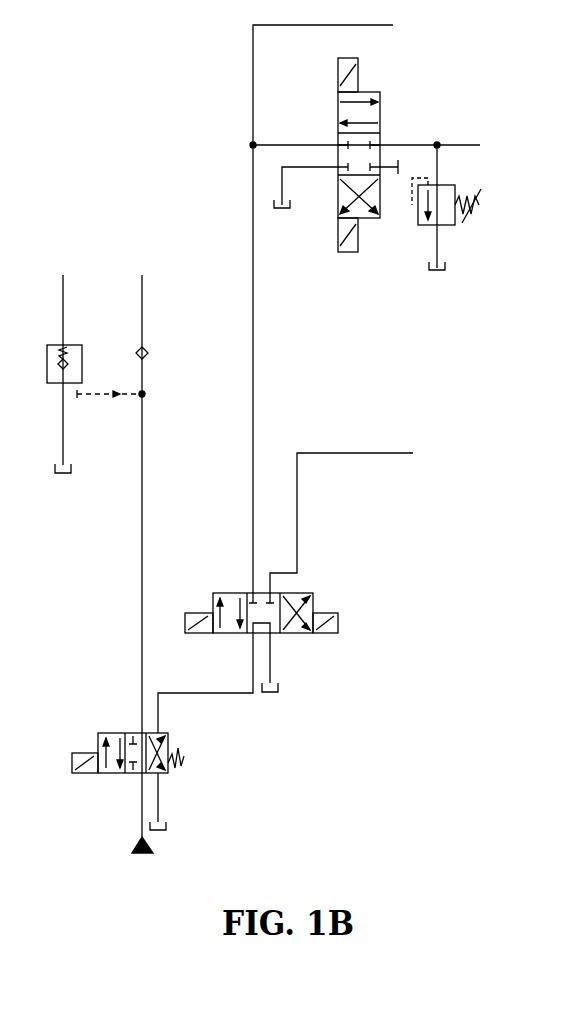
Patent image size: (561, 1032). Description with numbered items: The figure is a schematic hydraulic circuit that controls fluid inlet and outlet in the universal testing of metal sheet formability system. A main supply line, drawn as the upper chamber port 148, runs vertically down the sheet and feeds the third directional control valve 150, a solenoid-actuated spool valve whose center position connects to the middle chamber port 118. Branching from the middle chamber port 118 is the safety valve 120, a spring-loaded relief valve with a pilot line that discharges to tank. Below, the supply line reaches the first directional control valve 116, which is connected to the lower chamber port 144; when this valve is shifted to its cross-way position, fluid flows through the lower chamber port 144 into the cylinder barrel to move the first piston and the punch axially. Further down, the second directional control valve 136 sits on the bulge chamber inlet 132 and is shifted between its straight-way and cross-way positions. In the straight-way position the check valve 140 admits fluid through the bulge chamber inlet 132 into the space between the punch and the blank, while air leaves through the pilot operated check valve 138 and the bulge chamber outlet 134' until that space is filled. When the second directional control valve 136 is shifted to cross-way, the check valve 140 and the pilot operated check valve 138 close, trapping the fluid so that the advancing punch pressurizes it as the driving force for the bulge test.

The upper chamber port 148 is at (344, 305).
The third directional control valve 150 is at (381, 107).
The middle chamber port 118 is at (389, 146).
The safety valve 120 is at (443, 226).
The bulge chamber outlet 134' is at (66, 360).
The pilot operated check valve 138 is at (48, 343).
The bulge chamber inlet 132 is at (118, 550).
The check valve 140 is at (148, 350).
The lower chamber port 144 is at (368, 516).
The first directional control valve 116 is at (313, 633).
The second directional control valve 136 is at (185, 764).